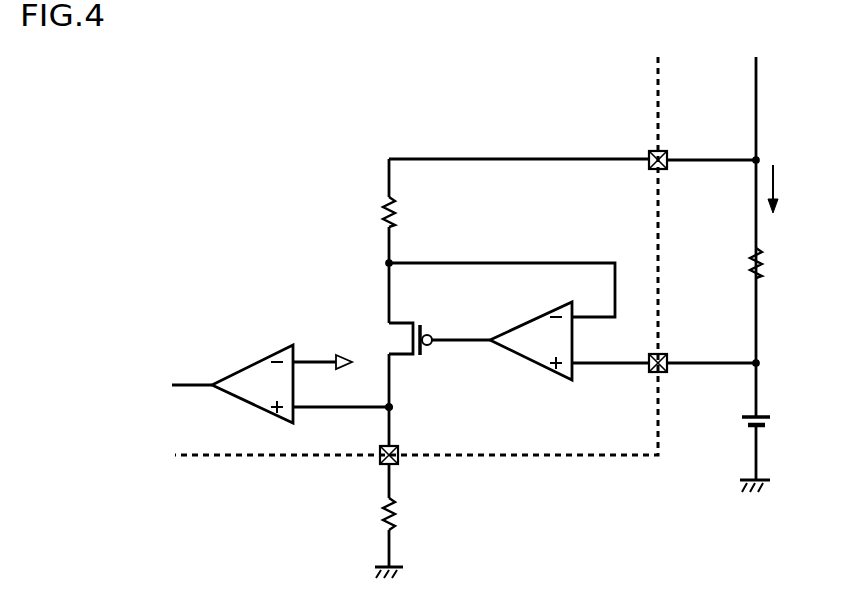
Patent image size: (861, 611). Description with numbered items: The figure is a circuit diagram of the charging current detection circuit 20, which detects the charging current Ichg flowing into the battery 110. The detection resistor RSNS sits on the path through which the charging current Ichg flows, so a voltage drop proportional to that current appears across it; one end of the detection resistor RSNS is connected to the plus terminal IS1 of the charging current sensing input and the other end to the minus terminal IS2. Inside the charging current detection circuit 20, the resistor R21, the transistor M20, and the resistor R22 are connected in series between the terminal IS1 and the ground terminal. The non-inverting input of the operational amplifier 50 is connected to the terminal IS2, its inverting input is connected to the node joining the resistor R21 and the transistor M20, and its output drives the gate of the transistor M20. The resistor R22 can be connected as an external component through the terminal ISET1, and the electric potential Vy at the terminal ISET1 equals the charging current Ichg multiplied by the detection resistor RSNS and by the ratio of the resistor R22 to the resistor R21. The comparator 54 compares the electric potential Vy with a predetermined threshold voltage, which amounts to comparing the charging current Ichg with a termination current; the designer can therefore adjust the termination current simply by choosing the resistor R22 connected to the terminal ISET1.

The charging current detection circuit 20 is at (303, 165).
The operational amplifier 50 is at (531, 318).
The comparator 54 is at (251, 361).
The battery 110 is at (771, 419).
The transistor M20 is at (392, 338).
The resistor R21 is at (411, 212).
The resistor R22 is at (411, 517).
The detection resistor RSNS is at (786, 263).
The plus terminal of the charging current sensing input terminal IS1 is at (668, 152).
The minus terminal of the charging current sensing input terminal IS2 is at (668, 355).
The terminal ISET1 is at (379, 465).
The electric potential Vy is at (404, 407).
The charging current Ichg is at (800, 188).